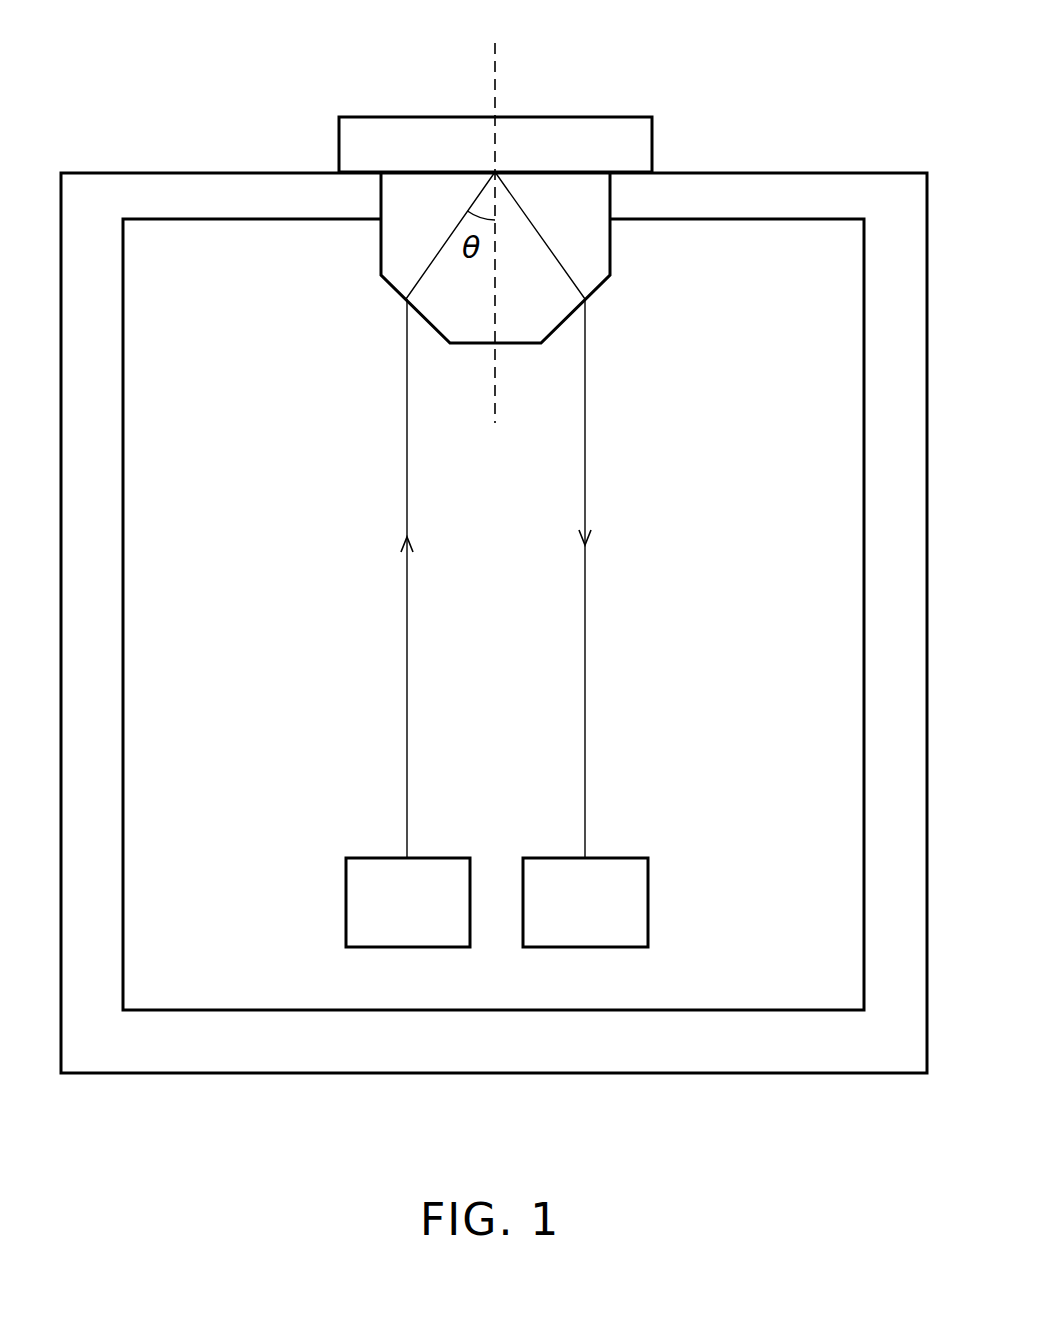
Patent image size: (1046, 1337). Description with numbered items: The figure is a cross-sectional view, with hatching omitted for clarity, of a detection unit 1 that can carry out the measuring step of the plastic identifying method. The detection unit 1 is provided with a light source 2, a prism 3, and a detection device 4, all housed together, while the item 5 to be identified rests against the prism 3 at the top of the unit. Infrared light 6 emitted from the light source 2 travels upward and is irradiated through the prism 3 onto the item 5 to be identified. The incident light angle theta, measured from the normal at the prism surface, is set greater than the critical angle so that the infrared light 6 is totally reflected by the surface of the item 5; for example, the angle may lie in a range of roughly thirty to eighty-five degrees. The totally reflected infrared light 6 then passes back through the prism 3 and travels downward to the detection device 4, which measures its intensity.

The detection unit 1 is at (830, 148).
The light source 2 is at (372, 872).
The prism 3 is at (560, 193).
The detection device 4 is at (620, 872).
The item to be identified 5 is at (418, 135).
The infrared light 6 is at (586, 626).